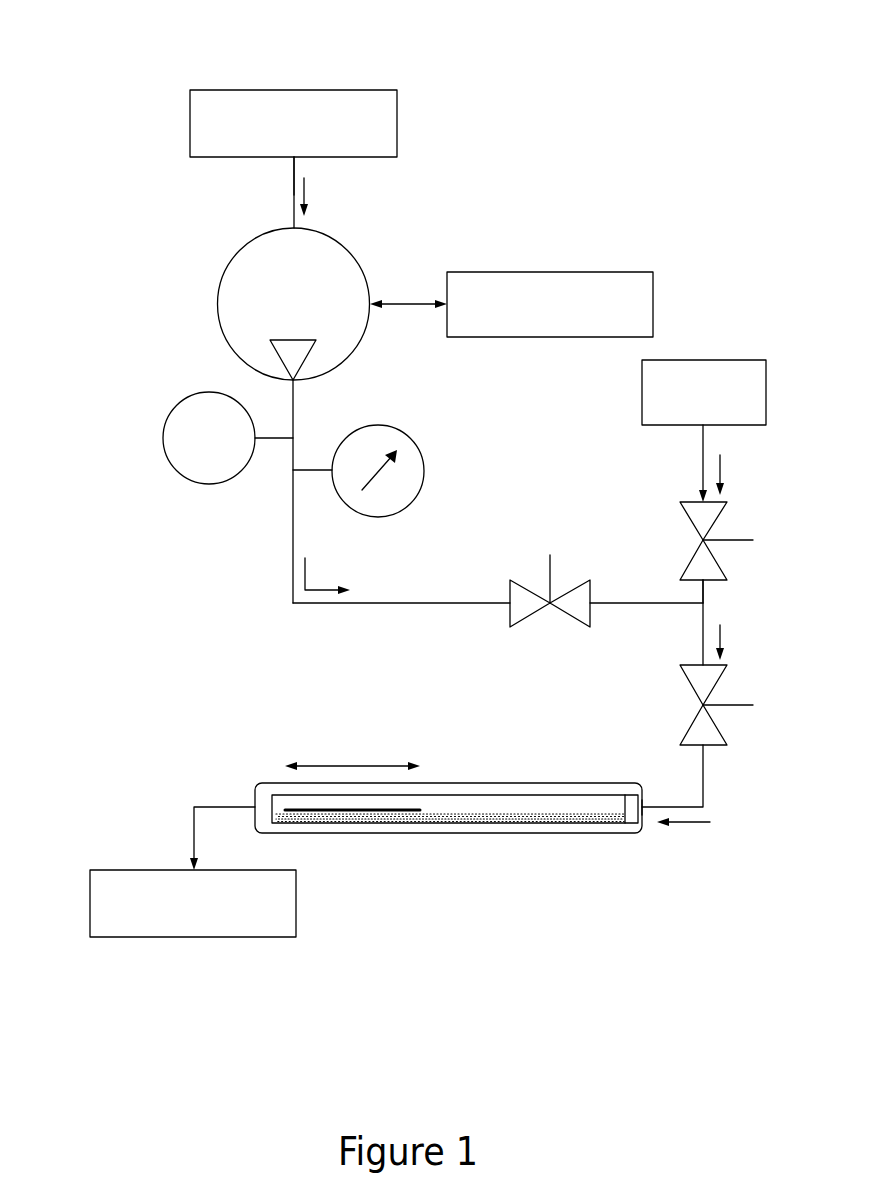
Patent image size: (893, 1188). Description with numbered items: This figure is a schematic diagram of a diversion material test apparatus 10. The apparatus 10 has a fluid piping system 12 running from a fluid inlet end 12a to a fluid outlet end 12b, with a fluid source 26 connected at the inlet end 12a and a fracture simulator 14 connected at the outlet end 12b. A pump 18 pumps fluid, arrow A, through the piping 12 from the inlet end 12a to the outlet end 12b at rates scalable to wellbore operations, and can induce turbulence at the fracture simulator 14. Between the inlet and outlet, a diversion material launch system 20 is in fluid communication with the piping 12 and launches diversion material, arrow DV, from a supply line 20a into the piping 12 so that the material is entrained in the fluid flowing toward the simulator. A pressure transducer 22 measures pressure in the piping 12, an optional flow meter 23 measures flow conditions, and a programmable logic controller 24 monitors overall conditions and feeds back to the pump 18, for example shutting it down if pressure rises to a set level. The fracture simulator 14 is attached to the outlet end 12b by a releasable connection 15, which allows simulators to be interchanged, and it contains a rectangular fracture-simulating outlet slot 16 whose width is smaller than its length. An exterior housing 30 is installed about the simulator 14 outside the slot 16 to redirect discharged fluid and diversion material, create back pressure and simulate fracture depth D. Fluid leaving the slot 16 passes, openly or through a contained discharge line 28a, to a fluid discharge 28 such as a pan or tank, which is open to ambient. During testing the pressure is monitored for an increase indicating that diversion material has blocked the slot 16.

The test apparatus 10 is at (606, 58).
The fluid piping system 12 is at (294, 210).
The fluid inlet end 12a is at (294, 163).
The fluid outlet end 12b is at (643, 812).
The fracture simulator 14 is at (488, 823).
The releasable connection 15 is at (631, 797).
The fracture-simulating outlet slot 16 is at (356, 812).
The pump 18 is at (217, 305).
The diversion material launch system 20 is at (766, 390).
The supply line 20a is at (703, 590).
The pressure transducer 22 is at (425, 470).
The flow meter 23 is at (163, 440).
The programmable logic controller 24 is at (653, 300).
The fluid source 26 is at (397, 122).
The fluid discharge 28 is at (186, 937).
The discharge line 28a is at (225, 807).
The housing 30 is at (547, 833).